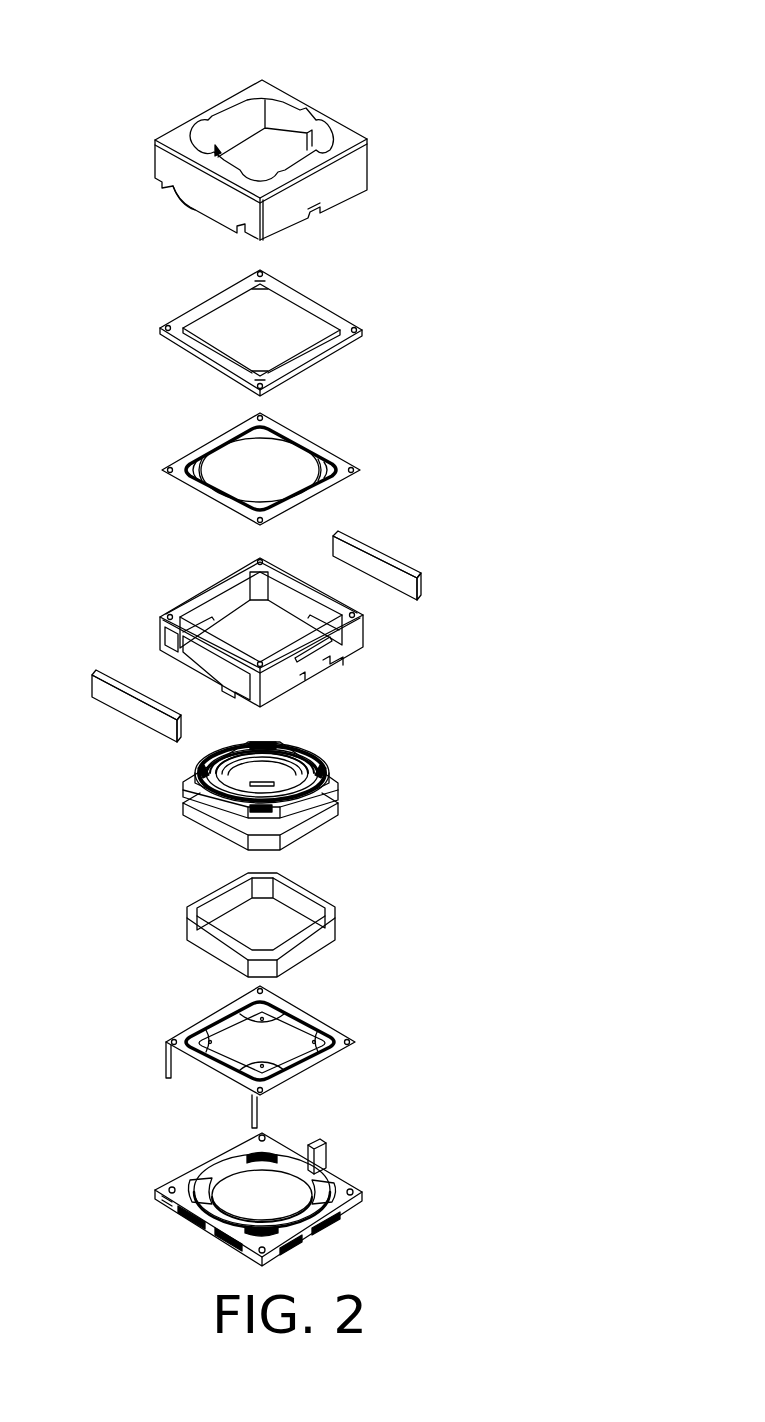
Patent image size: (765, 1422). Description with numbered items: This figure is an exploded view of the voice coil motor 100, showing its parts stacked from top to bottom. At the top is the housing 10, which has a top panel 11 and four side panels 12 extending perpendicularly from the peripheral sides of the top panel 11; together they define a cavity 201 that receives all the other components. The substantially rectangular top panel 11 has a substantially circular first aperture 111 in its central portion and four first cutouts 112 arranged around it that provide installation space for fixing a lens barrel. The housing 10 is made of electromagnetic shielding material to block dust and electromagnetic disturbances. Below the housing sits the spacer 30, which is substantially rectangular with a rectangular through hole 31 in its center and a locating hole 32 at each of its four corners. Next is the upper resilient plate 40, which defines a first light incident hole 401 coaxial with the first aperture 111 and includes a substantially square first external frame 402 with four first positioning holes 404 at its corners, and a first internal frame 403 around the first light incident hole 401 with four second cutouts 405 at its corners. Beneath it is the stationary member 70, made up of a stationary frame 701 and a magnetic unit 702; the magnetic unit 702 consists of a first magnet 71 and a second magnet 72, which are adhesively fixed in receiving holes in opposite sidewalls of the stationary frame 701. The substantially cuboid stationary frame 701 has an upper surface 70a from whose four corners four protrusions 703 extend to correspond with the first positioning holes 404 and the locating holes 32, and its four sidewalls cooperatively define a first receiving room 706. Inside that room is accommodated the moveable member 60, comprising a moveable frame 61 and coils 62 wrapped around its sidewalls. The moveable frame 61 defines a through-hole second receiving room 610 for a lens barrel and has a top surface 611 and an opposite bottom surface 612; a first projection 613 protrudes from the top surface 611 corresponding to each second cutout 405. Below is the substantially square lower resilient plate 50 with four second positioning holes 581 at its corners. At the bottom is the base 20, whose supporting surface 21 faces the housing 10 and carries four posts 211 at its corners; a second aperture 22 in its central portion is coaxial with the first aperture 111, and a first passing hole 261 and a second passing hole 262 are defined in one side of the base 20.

The voice coil motor 100 is at (280, 33).
The housing 10 is at (342, 102).
The top panel 11 is at (340, 132).
The side panels 12 is at (355, 178).
The first aperture 111 is at (227, 163).
The first cutouts 112 is at (197, 138).
The cavity 201 is at (250, 148).
The spacer 30 is at (342, 293).
The rectangular through hole 31 is at (223, 317).
The locating hole 32 is at (353, 328).
The upper resilient plate 40 is at (340, 442).
The first light incident hole 401 is at (240, 462).
The first external frame 402 is at (193, 458).
The first internal frame 403 is at (183, 477).
The first positioning holes 404 is at (347, 472).
The second cutouts 405 is at (330, 483).
The magnetic unit 702 is at (97, 538).
The first magnet 71 is at (108, 673).
The second magnet 72 is at (337, 545).
The stationary member 70 is at (355, 685).
The stationary frame 701 is at (350, 645).
The protrusions 703 is at (353, 612).
The upper surface 70a is at (355, 630).
The first receiving room 706 is at (282, 637).
The moveable member 60 is at (87, 833).
The moveable frame 61 is at (180, 835).
The second receiving room 610 is at (234, 770).
The top surface 611 is at (327, 772).
The bottom surface 612 is at (332, 830).
The first projection 613 is at (195, 773).
The coils 62 is at (198, 916).
The lower resilient plate 50 is at (340, 1008).
The second positioning holes 581 is at (353, 1042).
The base 20 is at (348, 1157).
The supporting surface 21 is at (213, 1168).
The second aperture 22 is at (290, 1198).
The posts 211 is at (168, 1192).
The first passing hole 261 is at (227, 1238).
The second passing hole 262 is at (182, 1212).